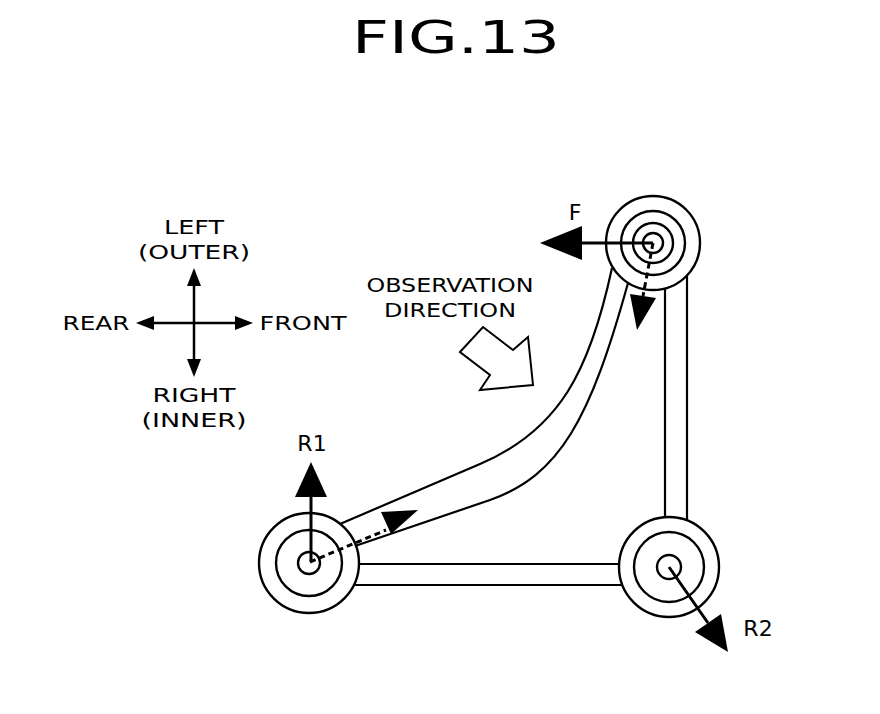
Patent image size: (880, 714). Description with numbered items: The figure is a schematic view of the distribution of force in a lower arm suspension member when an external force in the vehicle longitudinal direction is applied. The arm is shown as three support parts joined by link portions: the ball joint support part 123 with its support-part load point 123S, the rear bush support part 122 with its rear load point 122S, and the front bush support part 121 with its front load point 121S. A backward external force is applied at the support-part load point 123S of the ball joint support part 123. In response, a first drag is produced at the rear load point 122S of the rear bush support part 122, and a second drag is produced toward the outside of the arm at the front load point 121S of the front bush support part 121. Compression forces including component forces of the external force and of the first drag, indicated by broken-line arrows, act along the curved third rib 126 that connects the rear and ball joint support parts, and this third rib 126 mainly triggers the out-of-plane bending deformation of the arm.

The front bush support part 121 is at (643, 602).
The front load point 121S is at (677, 559).
The rear bush support part 122 is at (325, 603).
The rear load point 122S is at (300, 565).
The ball joint support part 123 is at (652, 196).
The support-part load point 123S is at (672, 240).
The third rib 126 is at (473, 481).